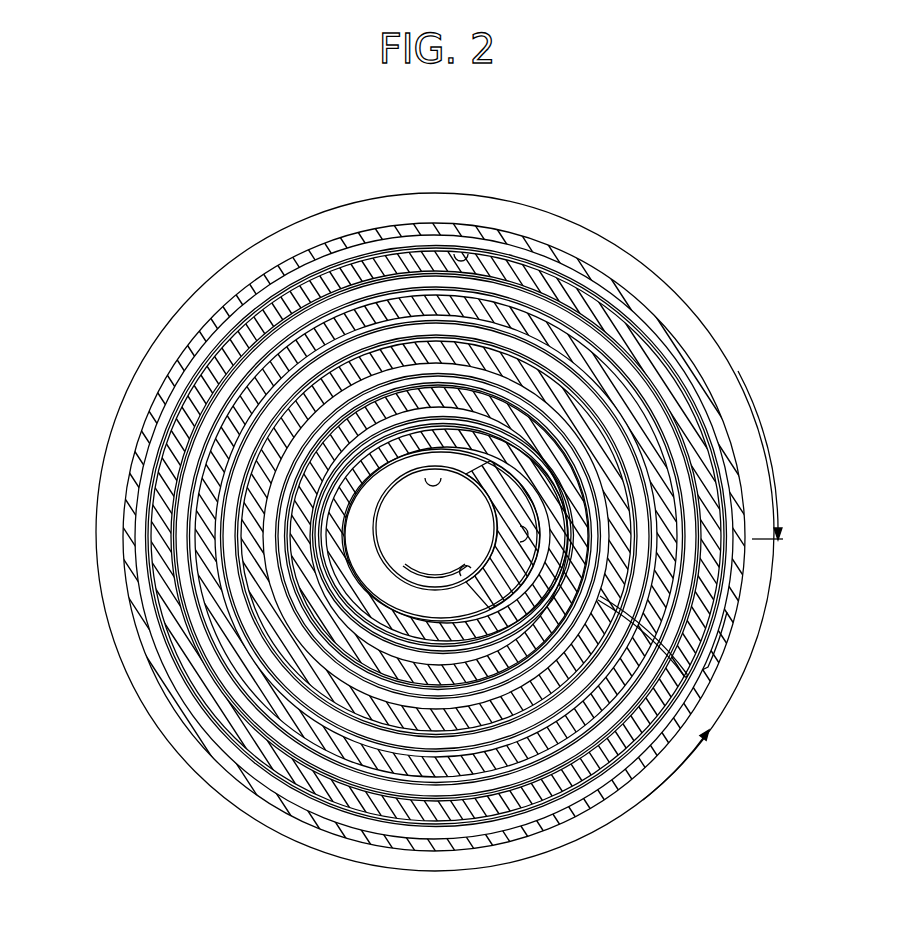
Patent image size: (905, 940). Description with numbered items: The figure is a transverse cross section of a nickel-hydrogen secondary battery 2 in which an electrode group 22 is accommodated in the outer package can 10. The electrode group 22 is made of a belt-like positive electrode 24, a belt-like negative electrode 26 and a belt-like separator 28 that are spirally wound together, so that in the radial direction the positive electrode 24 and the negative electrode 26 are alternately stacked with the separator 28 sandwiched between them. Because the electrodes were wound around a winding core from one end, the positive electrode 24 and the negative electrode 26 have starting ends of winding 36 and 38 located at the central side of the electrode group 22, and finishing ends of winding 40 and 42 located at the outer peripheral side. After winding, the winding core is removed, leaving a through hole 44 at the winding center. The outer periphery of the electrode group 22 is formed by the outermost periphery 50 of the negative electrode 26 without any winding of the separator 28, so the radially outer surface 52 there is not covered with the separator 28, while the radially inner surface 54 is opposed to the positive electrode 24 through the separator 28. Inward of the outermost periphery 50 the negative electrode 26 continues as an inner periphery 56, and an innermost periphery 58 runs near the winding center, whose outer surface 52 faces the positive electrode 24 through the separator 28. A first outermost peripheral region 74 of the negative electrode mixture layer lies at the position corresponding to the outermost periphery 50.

The nickel-hydrogen secondary battery 2 is at (672, 240).
The outer package can 10 is at (244, 797).
The electrode group 22 is at (322, 826).
The positive electrode 24 is at (651, 762).
The negative electrode 26 is at (487, 832).
The separator 28 is at (597, 776).
The starting end of winding of the positive electrode 36 is at (520, 534).
The starting end of winding of the negative electrode 38 is at (457, 574).
The finishing end of winding of the positive electrode 40 is at (673, 757).
The finishing end of winding of the negative electrode 42 is at (688, 710).
The through hole 44 is at (418, 468).
The outermost periphery of the negative electrode 50 is at (183, 682).
The outer surface 52 is at (533, 240).
The inner surface 54 is at (462, 250).
The inner periphery of the negative electrode 56 is at (250, 367).
The innermost periphery of the negative electrode 58 is at (378, 489).
The first outermost peripheral region 74 is at (683, 303).